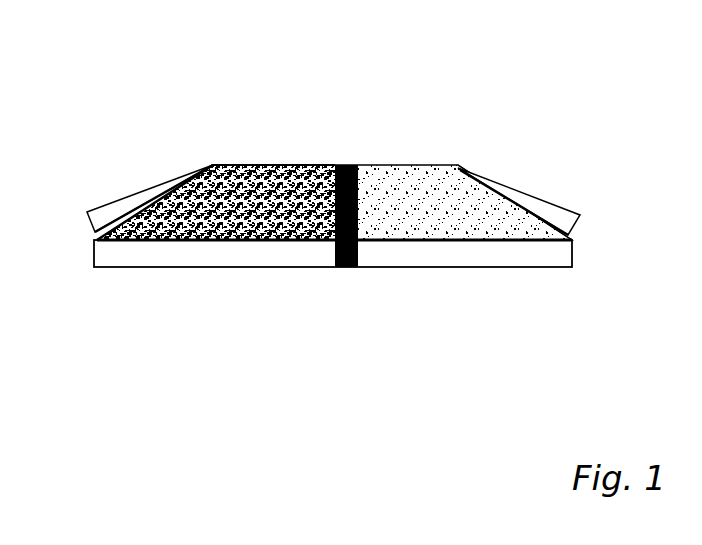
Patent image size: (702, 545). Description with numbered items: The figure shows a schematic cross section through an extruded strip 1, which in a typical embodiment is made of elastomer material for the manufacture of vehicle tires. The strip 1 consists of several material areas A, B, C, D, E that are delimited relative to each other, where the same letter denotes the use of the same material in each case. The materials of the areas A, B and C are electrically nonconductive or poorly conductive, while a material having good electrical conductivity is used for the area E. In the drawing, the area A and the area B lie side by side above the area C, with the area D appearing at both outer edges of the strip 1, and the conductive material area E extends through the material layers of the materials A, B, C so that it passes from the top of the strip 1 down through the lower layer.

The extruded strip 1 is at (420, 107).
The material area A is at (216, 202).
The material area B is at (465, 202).
The material area C is at (332, 256).
The material area D is at (333, 197).
The material area E is at (347, 235).